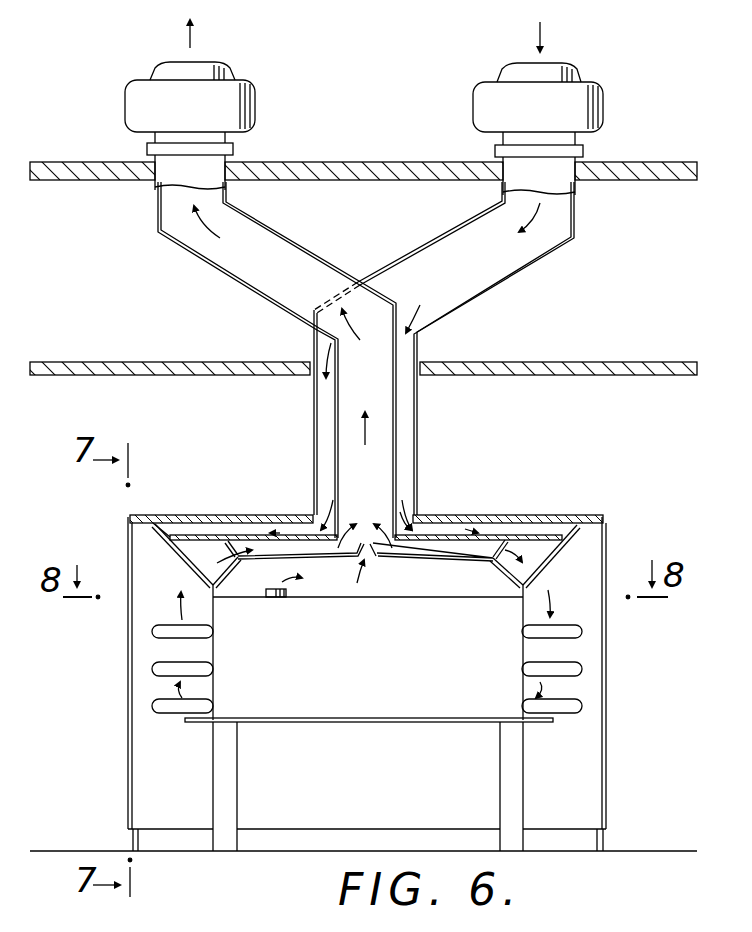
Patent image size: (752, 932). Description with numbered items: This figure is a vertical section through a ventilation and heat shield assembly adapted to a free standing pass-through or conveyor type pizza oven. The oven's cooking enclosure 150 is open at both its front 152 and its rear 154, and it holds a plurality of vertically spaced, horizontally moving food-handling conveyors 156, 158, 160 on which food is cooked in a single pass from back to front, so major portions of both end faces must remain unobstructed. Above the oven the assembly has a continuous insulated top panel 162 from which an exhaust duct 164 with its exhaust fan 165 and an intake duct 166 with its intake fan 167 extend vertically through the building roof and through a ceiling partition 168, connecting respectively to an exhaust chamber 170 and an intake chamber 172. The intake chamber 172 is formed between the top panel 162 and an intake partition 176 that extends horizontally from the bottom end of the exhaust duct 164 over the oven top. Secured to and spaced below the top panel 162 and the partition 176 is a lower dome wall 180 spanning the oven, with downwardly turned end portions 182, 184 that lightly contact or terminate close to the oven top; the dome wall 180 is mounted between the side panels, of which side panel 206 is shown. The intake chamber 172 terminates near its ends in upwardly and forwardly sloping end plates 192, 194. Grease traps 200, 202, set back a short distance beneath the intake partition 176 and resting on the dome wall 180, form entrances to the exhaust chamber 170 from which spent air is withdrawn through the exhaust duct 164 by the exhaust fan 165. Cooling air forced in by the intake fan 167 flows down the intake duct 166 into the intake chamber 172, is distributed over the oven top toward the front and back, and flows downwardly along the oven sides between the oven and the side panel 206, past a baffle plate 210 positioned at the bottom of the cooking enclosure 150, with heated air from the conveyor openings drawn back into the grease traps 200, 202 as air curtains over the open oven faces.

The cooking enclosure 150 is at (332, 736).
The front 152 is at (206, 652).
The rear 154 is at (535, 652).
The food-handling conveyor 156 is at (581, 632).
The food-handling conveyor 158 is at (581, 670).
The food-handling conveyor 160 is at (581, 705).
The top panel 162 is at (472, 517).
The exhaust duct 164 is at (285, 234).
The exhaust fan 165 is at (257, 109).
The intake duct 166 is at (422, 417).
The intake fan 167 is at (605, 109).
The ceiling partition 168 is at (578, 362).
The exhaust chamber 170 is at (492, 548).
The intake chamber 172 is at (426, 537).
The intake partition 176 is at (264, 535).
The lower dome wall 180 is at (390, 558).
The downwardly turned end portion 182 is at (216, 590).
The downwardly turned end portion 184 is at (518, 587).
The end plate 192 is at (128, 535).
The end plate 194 is at (606, 536).
The grease trap 200 is at (238, 545).
The grease trap 202 is at (493, 558).
The side panel 206 is at (598, 773).
The baffle plate 210 is at (301, 563).